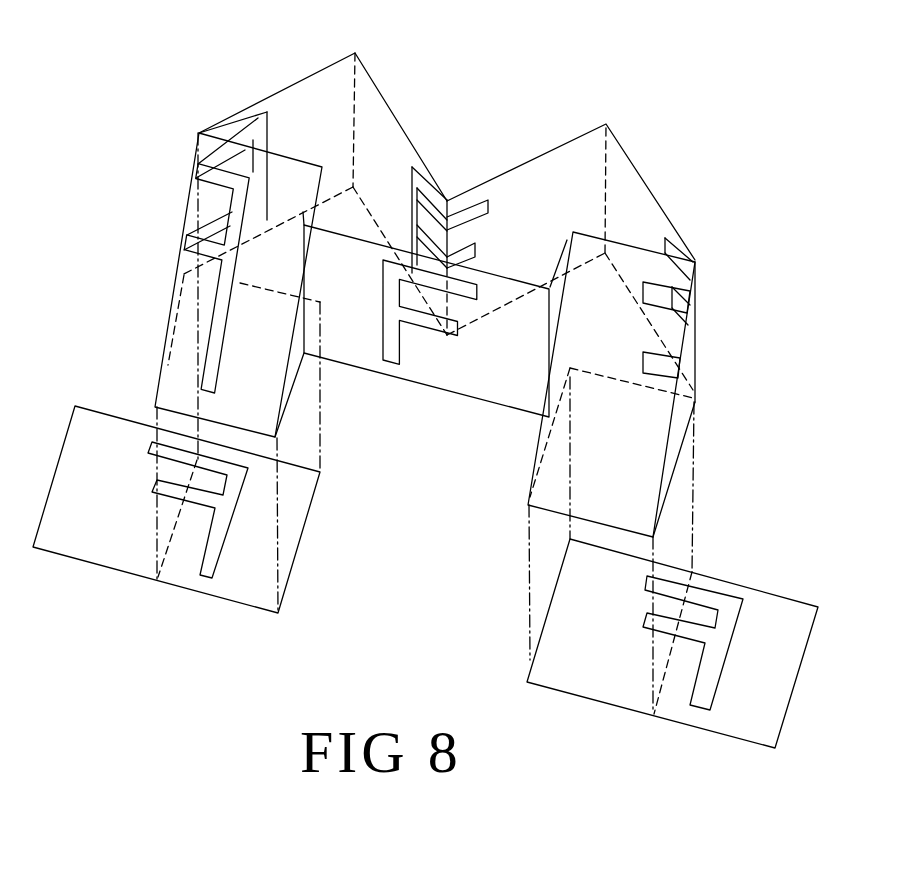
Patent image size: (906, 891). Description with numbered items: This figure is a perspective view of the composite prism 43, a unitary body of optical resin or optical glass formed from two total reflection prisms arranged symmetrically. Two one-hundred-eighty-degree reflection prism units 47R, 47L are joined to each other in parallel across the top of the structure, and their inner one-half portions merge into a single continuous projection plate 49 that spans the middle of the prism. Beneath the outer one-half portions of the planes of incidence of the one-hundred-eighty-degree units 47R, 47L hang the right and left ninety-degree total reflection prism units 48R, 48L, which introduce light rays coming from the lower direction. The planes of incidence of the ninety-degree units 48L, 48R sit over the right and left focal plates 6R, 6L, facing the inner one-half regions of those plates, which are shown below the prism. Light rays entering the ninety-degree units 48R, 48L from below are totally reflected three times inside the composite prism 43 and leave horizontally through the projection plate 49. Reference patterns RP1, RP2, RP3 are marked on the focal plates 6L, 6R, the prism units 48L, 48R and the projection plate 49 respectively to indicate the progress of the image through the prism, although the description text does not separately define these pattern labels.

The composite prism 43 is at (440, 201).
The 180-degree reflection prism unit 47L is at (319, 85).
The 180-degree reflection prism unit 47R is at (568, 150).
The 90-degree total reflection prism unit 48L is at (182, 378).
The 90-degree total reflection prism unit 48R is at (541, 493).
The projection plate 49 is at (450, 377).
The first reference pattern RP1 is at (178, 299).
The second reference pattern RP2 is at (277, 130).
The third reference pattern RP3 is at (400, 177).
The focal plate 6L is at (88, 563).
The focal plate 6R is at (667, 718).